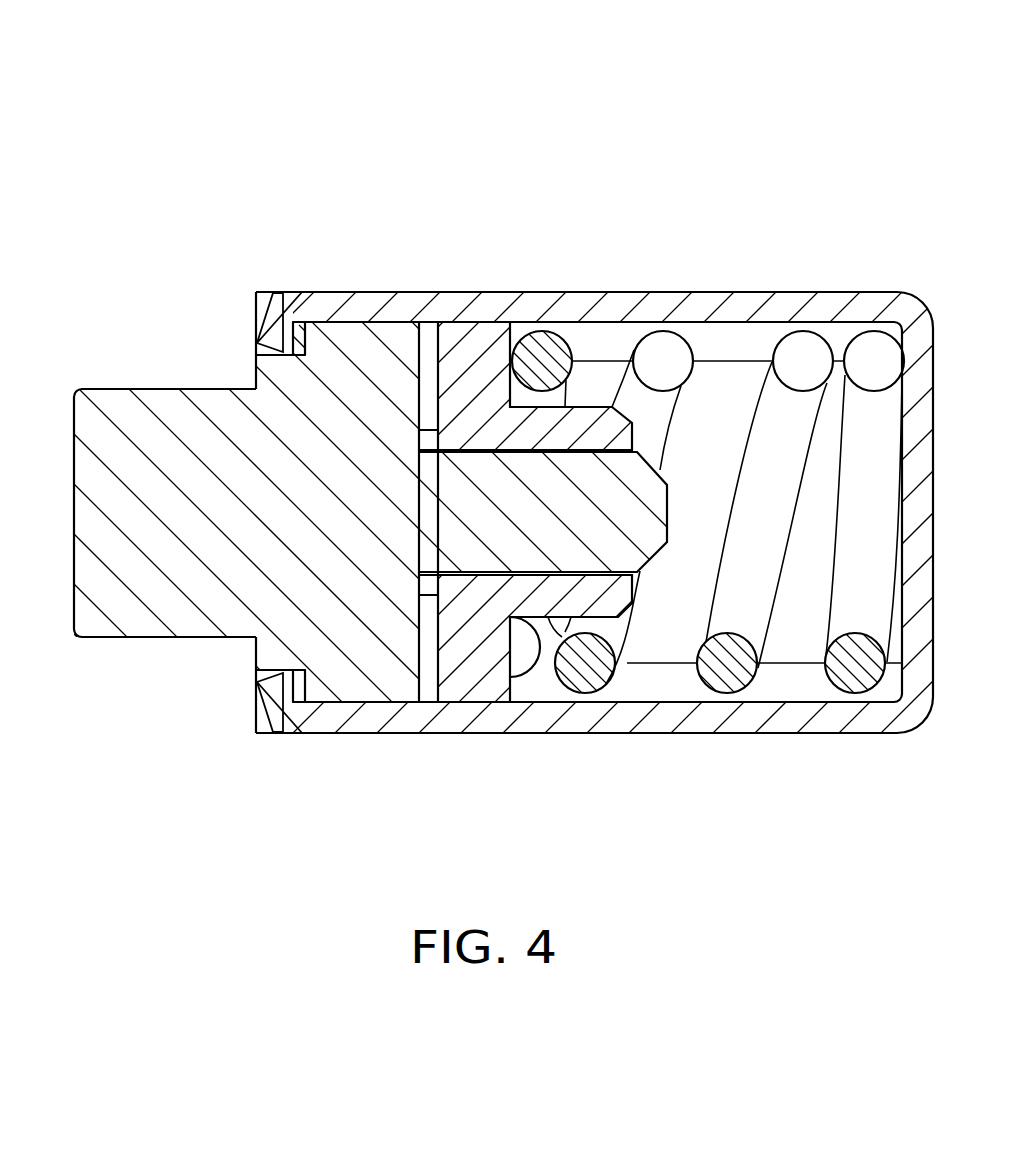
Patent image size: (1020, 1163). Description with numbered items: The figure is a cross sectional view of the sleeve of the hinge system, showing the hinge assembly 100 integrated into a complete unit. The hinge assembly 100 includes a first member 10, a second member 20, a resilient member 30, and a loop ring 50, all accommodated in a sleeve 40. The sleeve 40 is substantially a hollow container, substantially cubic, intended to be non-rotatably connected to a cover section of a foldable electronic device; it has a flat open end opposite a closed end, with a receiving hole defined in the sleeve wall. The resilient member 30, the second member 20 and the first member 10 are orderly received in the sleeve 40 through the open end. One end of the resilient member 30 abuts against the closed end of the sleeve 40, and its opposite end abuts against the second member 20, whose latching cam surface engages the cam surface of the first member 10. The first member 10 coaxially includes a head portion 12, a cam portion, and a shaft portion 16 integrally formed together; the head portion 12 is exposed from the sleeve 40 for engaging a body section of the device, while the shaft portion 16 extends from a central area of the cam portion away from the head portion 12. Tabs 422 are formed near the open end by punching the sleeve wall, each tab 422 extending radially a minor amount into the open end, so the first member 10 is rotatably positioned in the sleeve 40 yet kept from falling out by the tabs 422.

The hinge assembly 100 is at (563, 58).
The first member 10 is at (380, 362).
The head portion 12 is at (188, 418).
The shaft portion 16 is at (525, 508).
The second member 20 is at (490, 363).
The resilient member 30 is at (662, 355).
The sleeve 40 is at (831, 305).
The loop ring 50 is at (301, 340).
The tab 422 is at (272, 325).